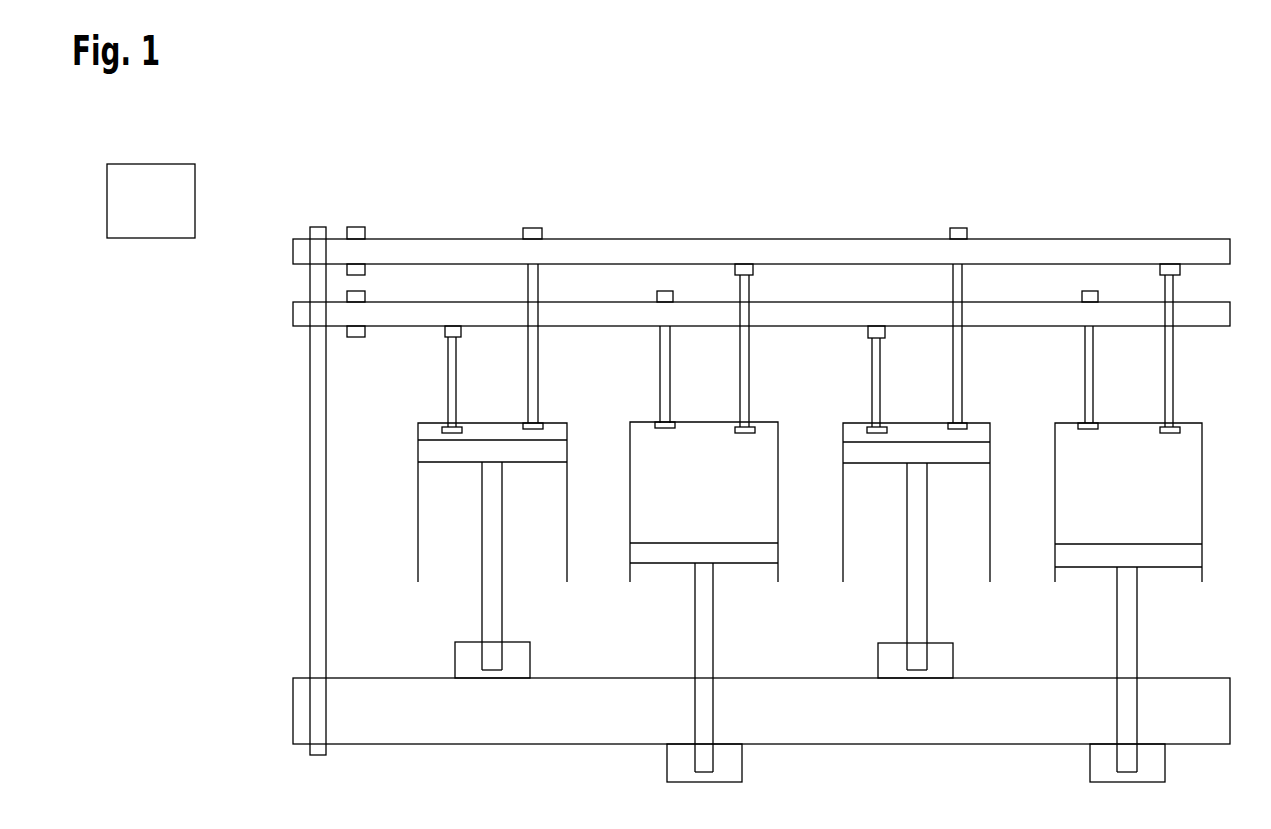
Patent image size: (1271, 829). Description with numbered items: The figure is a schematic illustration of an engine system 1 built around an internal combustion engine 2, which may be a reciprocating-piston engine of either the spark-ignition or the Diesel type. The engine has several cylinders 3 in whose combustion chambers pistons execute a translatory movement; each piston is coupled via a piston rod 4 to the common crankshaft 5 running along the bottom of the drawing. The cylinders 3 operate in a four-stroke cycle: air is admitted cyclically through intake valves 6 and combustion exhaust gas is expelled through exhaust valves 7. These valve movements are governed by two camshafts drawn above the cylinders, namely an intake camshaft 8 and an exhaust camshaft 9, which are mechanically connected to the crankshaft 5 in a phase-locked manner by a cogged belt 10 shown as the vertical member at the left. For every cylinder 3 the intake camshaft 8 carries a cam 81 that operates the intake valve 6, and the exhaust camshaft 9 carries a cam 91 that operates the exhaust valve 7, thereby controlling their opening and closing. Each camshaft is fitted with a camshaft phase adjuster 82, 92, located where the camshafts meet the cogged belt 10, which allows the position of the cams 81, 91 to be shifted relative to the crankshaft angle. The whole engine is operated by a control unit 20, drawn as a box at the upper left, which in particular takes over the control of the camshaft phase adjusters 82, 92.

The engine system 1 is at (1100, 157).
The internal combustion engine 2 is at (866, 156).
The cylinder 3 is at (778, 525).
The piston rod 4 is at (1130, 625).
The crankshaft 5 is at (390, 690).
The intake valve 6 is at (454, 424).
The exhaust valve 7 is at (535, 423).
The intake camshaft 8 is at (390, 315).
The exhaust camshaft 9 is at (390, 250).
The cogged belt 10 is at (318, 622).
The control unit 20 is at (184, 179).
The cam 81 is at (445, 330).
The camshaft phase adjuster 82 is at (352, 338).
The cam 91 is at (534, 232).
The camshaft phase adjuster 92 is at (352, 228).